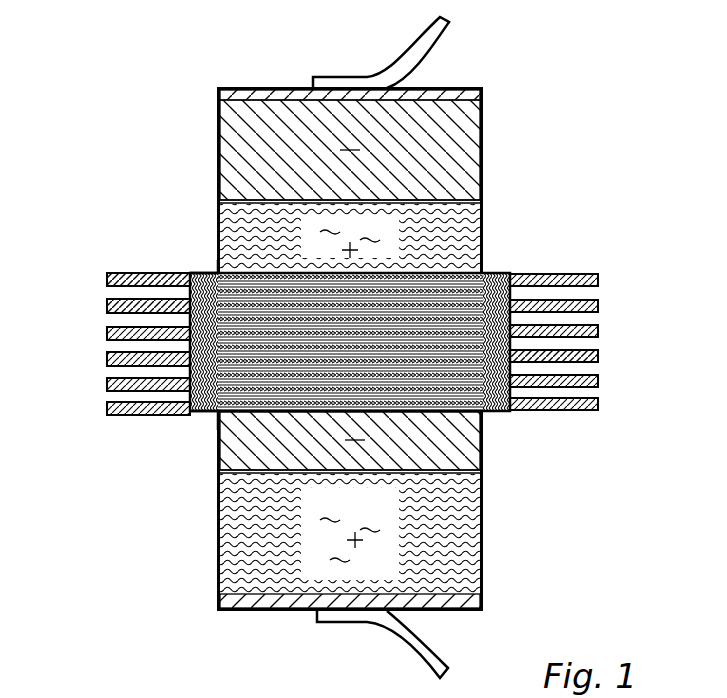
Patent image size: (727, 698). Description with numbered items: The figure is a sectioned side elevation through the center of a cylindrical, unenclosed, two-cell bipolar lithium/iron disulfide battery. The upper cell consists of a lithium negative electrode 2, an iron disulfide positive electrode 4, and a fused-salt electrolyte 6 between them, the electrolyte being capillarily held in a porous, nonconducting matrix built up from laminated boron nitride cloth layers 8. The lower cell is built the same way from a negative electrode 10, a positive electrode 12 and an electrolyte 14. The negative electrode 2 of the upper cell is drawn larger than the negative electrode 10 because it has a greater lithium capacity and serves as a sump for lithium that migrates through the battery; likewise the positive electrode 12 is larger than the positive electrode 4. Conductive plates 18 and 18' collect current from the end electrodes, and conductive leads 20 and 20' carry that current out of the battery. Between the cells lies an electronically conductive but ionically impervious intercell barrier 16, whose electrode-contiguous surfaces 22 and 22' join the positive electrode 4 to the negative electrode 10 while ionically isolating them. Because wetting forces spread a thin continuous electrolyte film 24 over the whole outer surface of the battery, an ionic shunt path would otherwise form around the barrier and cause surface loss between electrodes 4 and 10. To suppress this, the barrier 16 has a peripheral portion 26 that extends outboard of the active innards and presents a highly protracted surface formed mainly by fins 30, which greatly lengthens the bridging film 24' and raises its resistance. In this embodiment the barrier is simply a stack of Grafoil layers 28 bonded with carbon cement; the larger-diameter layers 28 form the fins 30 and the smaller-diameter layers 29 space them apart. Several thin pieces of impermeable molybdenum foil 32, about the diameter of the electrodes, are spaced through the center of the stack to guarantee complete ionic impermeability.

The negative electrode 2 is at (470, 156).
The positive electrode 4 is at (484, 253).
The electrolyte 6 is at (484, 206).
The boron nitride cloth layers 8 is at (218, 212).
The negative electrode 10 is at (240, 450).
The positive electrode 12 is at (484, 525).
The electrolyte 14 is at (484, 480).
The intercell barrier 16 is at (366, 336).
The conductive plate 18 is at (375, 90).
The conductive plate 18' is at (388, 602).
The conductive lead 20 is at (400, 52).
The conductive lead 20' is at (408, 644).
The electrode-contiguous surface 22 is at (201, 245).
The electrode-contiguous surface 22' is at (190, 436).
The electrolyte film 24 is at (400, 331).
The electrolyte film 24' is at (351, 361).
The peripheral portion 26 is at (600, 355).
The Grafoil layers 28 is at (107, 333).
The smaller diameter layers 29 is at (200, 287).
The fins 30 is at (118, 272).
The molybdenum foil 32 is at (293, 345).